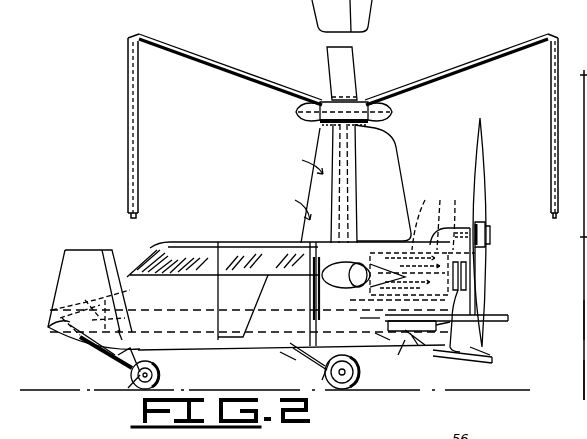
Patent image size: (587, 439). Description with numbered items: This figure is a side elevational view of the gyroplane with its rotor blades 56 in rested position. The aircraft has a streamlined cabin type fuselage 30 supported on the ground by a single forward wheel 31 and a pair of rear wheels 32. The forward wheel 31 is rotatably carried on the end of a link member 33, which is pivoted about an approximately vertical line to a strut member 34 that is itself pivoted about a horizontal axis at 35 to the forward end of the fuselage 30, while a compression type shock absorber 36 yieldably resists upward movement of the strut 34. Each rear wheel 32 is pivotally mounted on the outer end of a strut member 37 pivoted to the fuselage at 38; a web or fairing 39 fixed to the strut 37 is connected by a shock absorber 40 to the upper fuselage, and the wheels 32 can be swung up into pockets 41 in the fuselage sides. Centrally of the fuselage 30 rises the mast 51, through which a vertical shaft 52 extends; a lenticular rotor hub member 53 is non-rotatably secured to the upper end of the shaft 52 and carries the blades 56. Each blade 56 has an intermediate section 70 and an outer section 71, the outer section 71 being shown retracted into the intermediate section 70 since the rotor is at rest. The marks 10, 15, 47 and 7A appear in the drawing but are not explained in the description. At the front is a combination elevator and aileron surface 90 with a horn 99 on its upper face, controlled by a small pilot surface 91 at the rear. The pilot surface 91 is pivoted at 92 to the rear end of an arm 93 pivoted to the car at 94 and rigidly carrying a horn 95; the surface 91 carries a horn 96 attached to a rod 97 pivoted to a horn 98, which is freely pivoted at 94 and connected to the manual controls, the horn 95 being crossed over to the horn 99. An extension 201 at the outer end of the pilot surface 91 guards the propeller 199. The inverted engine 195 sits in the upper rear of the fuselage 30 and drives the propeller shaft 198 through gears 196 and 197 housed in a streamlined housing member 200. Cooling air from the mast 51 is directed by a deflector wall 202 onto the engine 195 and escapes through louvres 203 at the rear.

The rotor blade 56 is at (213, 54).
The lenticular rotor hub member 53 is at (368, 100).
The mast 51 is at (315, 148).
The shaft 52 is at (368, 157).
The pocket 41 is at (306, 243).
The deflector wall 202 is at (279, 241).
The fuselage 30 is at (250, 296).
The shock absorber 40 is at (306, 293).
The combination elevator and aileron surface 90 is at (72, 256).
The shock absorber 36 is at (95, 292).
The horn 99 is at (62, 312).
The nose member 15 is at (128, 340).
The pivot 35 is at (80, 340).
The strut member 34 is at (113, 368).
The forward wheel 31 is at (158, 378).
The link member 33 is at (128, 385).
The engine 10 is at (400, 268).
The pivot 92 is at (444, 321).
The arm 93 is at (412, 316).
The pivot 94 is at (419, 313).
The horn 95 is at (390, 310).
The horn 98 is at (371, 332).
The rod 97 is at (407, 338).
The pivot 38 is at (288, 350).
The web or fairing 39 is at (305, 363).
The rear wheel 32 is at (364, 377).
The strut member 37 is at (330, 378).
The extension 201 is at (504, 314).
The pilot surface 91 is at (445, 360).
The tail strut fitting 47 is at (488, 360).
The horn 96 is at (420, 355).
The propeller 199 is at (488, 163).
The streamlined housing member 200 is at (484, 217).
The gear 196 is at (483, 255).
The louvres 203 is at (468, 273).
The propeller shaft 198 is at (439, 217).
The gear 197 is at (454, 225).
The engine 195 is at (427, 225).
The intermediate section 70 is at (580, 218).
The tail fin spar 7A is at (583, 330).
The outer section 71 is at (583, 362).